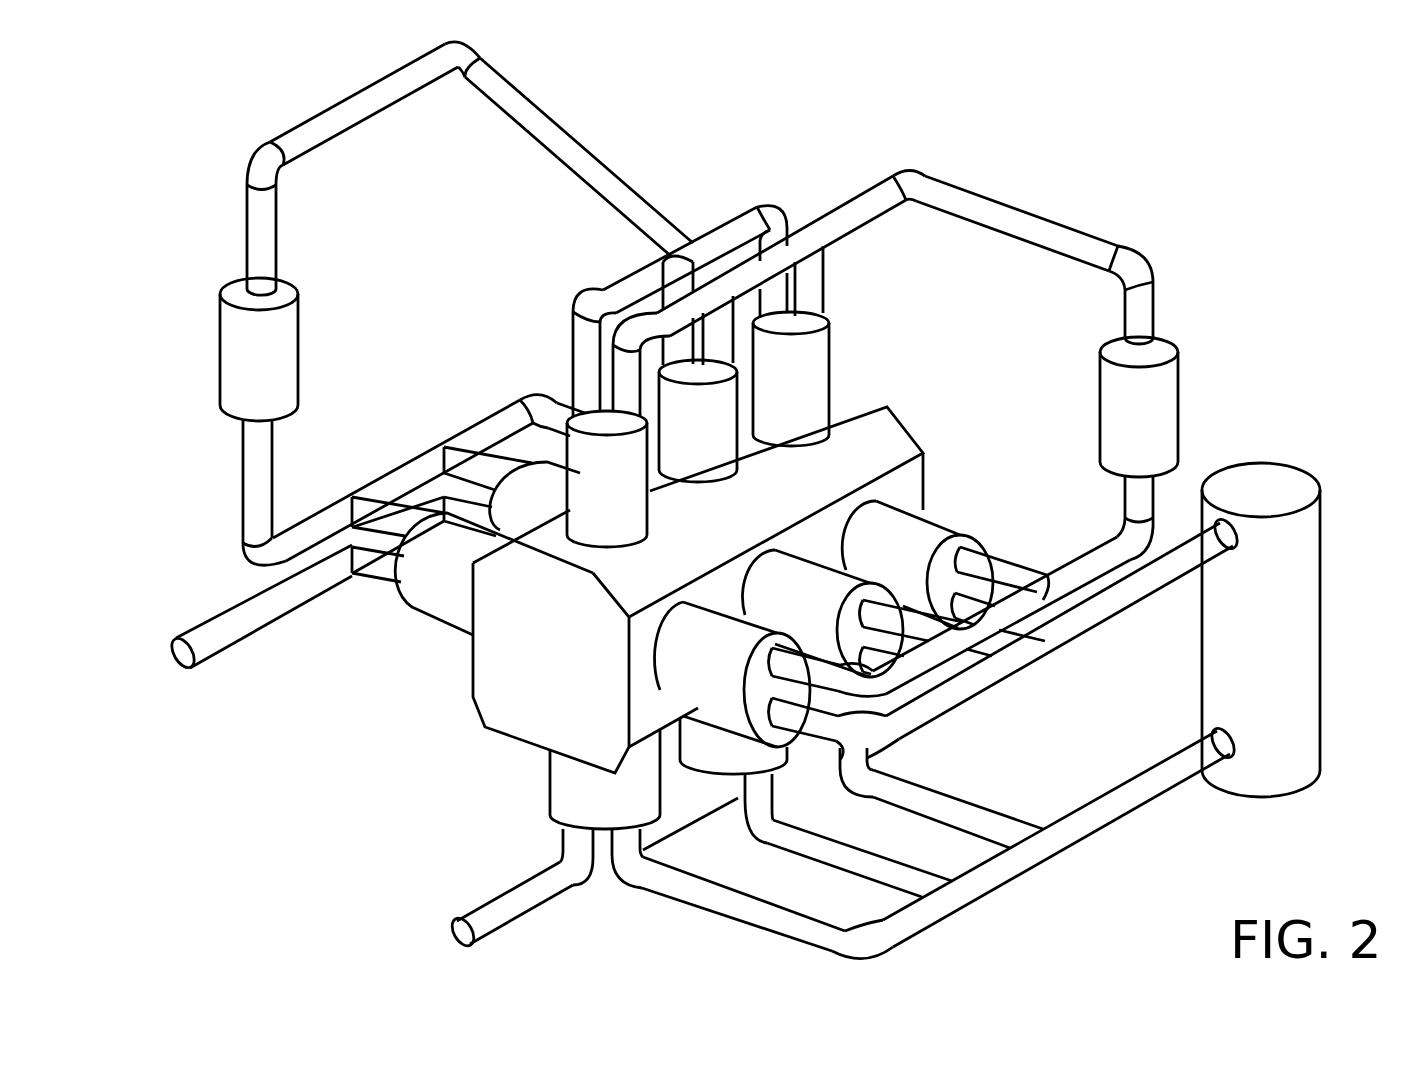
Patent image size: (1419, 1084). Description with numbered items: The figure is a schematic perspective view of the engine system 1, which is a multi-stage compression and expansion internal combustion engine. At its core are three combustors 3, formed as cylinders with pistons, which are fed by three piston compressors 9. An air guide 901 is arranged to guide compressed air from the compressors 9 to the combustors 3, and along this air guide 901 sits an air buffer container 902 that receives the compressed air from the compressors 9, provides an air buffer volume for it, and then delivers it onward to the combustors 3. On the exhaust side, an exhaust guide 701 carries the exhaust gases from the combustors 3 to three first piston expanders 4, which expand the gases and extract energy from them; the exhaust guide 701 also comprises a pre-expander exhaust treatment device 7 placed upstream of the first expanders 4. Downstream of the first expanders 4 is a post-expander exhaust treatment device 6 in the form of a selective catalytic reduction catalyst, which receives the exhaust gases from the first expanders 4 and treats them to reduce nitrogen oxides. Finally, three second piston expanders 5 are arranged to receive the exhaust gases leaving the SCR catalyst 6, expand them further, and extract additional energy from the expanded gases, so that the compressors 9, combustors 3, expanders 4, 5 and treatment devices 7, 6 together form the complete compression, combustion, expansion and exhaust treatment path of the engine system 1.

The engine system 1 is at (1248, 182).
The combustors 3 is at (805, 343).
The first piston expanders 4 is at (910, 537).
The second piston expanders 5 is at (788, 772).
The post-expander exhaust treatment device 6 is at (1320, 627).
The pre-expander exhaust treatment device 7 is at (1180, 403).
The piston compressors 9 is at (653, 452).
The exhaust guide 701 is at (1030, 212).
The air guide 901 is at (243, 235).
The air buffer container 902 is at (220, 347).